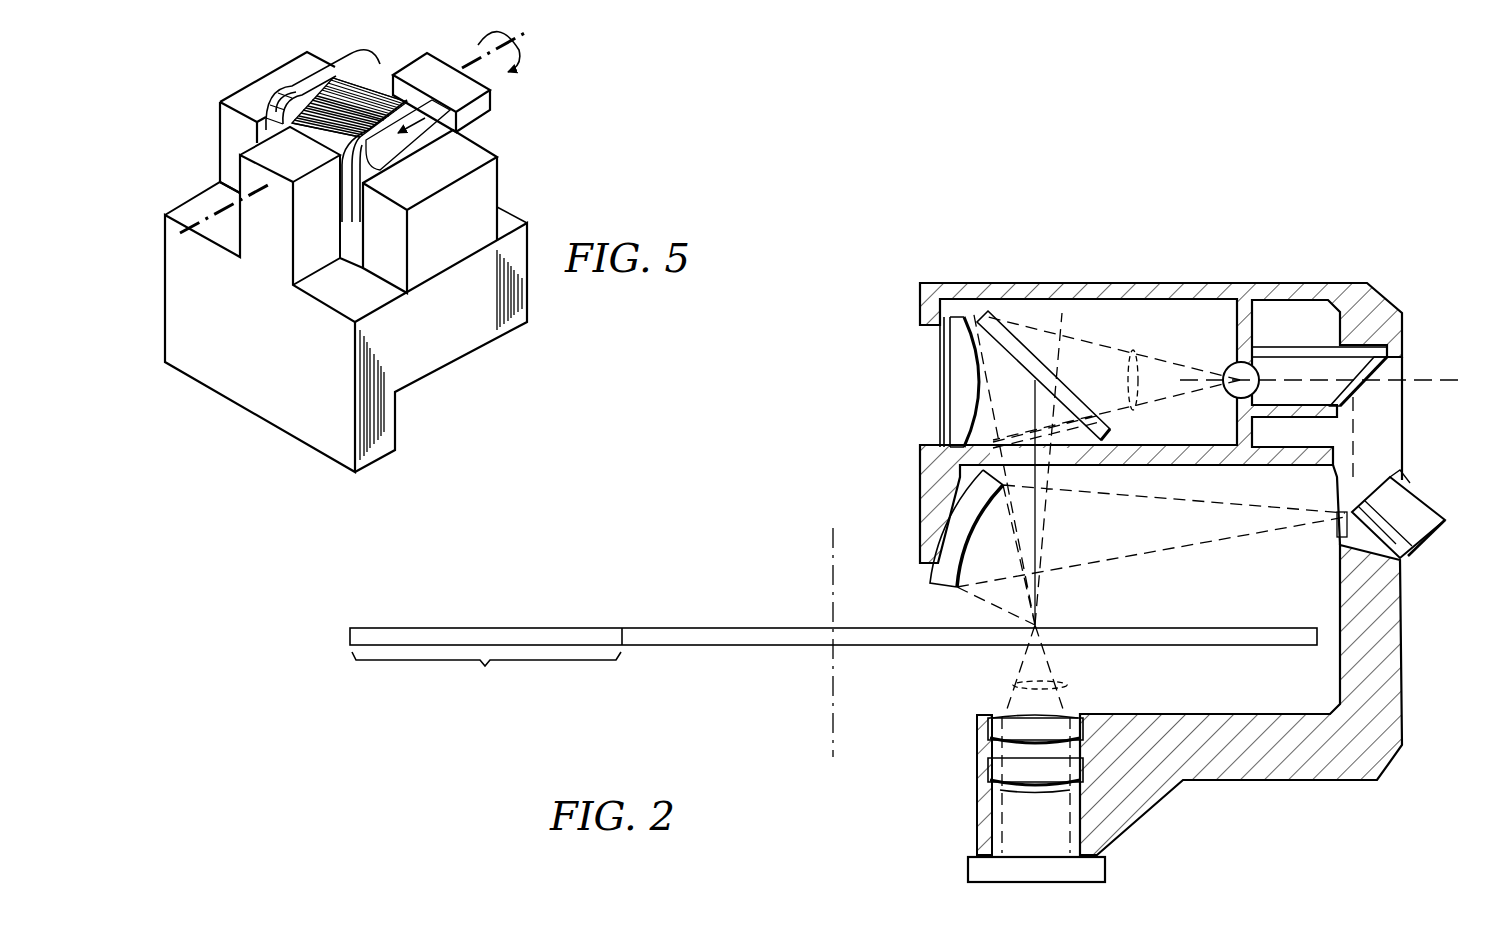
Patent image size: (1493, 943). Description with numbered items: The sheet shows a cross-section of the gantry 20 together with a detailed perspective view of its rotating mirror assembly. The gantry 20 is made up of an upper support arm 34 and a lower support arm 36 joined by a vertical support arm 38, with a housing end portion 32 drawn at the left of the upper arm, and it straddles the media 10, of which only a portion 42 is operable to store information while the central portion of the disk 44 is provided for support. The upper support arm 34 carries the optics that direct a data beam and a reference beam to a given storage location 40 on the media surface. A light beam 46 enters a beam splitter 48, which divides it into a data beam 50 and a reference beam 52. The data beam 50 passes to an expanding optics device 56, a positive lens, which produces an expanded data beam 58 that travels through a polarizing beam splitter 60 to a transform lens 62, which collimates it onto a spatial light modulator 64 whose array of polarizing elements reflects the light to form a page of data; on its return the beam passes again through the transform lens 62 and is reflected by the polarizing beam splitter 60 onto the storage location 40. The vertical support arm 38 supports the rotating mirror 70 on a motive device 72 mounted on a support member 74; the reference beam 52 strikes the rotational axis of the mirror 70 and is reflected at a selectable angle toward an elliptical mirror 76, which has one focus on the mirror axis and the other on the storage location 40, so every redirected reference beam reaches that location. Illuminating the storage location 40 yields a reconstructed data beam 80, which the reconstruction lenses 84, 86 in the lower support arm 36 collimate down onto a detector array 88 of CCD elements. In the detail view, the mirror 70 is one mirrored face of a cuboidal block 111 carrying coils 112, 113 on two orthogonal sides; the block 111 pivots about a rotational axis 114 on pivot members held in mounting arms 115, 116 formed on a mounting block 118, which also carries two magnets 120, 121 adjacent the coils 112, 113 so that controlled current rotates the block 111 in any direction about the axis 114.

In FIG. 2, the media 10 is at (565, 626).
In FIG. 2, the gantry 20 is at (1362, 240).
In FIG. 2, the housing end wall 32 is at (912, 296).
In FIG. 2, the upper support arm 34 is at (1195, 283).
In FIG. 2, the lower support arm 36 is at (1215, 782).
In FIG. 2, the vertical support arm 38 is at (1392, 636).
In FIG. 2, the storage location 40 is at (1040, 622).
In FIG. 2, the information storing portion 42 is at (486, 676).
In FIG. 2, the central portion of the disk 44 is at (697, 627).
In FIG. 2, the light beam 46 is at (1435, 372).
In FIG. 2, the beam splitter 48 is at (1345, 392).
In FIG. 2, the data beam 50 is at (1305, 352).
In FIG. 2, the reference beam 52 is at (1352, 430).
In FIG. 2, the expanding optics device 56 is at (1228, 370).
In FIG. 2, the expanded data beam 58 is at (1143, 410).
In FIG. 2, the polarizing beam splitter 60 is at (1022, 362).
In FIG. 2, the transform lens 62 is at (955, 382).
In FIG. 2, the spatial light modulator 64 is at (936, 424).
In FIG. 5, the rotating mirror 70 is at (354, 90).
In FIG. 2, the rotating mirror 70 is at (1340, 525).
In FIG. 5, the motive device 72 is at (168, 131).
In FIG. 2, the motive device 72 is at (1418, 495).
In FIG. 2, the support member 74 is at (1430, 530).
In FIG. 2, the elliptical mirror 76 is at (927, 578).
In FIG. 2, the reconstructed data beam 80 is at (1068, 686).
In FIG. 2, the reconstruction lens 84 is at (997, 716).
In FIG. 2, the reconstruction lens 86 is at (1032, 790).
In FIG. 2, the detector array 88 is at (968, 870).
In FIG. 5, the block 111 is at (455, 122).
In FIG. 5, the coil 112 is at (300, 82).
In FIG. 5, the coil 113 is at (432, 75).
In FIG. 5, the rotational axis 114 is at (205, 215).
In FIG. 5, the mounting arm 115 is at (303, 262).
In FIG. 5, the mounting arm 116 is at (412, 72).
In FIG. 5, the mounting block 118 is at (452, 345).
In FIG. 5, the magnet 120 is at (490, 190).
In FIG. 5, the magnet 121 is at (240, 95).